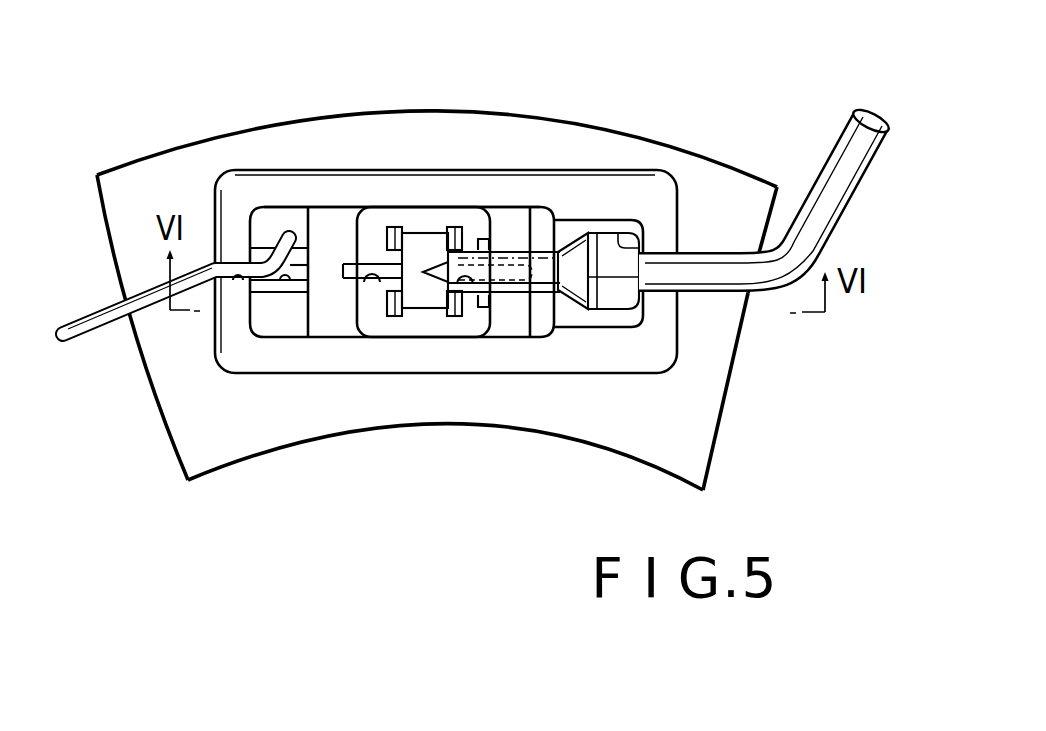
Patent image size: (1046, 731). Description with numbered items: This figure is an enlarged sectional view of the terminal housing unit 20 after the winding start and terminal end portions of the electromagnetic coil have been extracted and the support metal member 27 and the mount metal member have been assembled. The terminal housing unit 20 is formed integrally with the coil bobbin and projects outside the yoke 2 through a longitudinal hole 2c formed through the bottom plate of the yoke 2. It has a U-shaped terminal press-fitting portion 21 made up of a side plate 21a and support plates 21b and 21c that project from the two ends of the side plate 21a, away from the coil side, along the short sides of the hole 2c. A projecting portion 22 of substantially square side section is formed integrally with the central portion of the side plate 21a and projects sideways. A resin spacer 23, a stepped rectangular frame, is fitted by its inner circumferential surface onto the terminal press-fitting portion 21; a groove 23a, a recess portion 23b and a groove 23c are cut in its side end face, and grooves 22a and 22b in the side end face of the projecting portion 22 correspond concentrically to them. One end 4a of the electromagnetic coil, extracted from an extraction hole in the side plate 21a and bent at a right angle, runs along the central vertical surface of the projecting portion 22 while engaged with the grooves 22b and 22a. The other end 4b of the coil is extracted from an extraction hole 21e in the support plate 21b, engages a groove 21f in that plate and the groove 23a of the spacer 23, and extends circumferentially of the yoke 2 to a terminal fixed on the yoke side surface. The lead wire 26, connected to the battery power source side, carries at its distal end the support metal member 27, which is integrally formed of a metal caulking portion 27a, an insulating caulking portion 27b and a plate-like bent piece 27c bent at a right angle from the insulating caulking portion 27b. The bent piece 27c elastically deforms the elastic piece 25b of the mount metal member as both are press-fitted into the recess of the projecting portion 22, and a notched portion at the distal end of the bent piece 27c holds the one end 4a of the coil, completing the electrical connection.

The yoke 2 is at (680, 141).
The longitudinal hole 2c is at (540, 310).
The one end of the electromagnetic coil 4a is at (340, 300).
The other end of the electromagnetic coil 4b is at (96, 323).
The terminal housing unit 20 is at (413, 193).
The terminal press-fitting portion 21 is at (207, 368).
The side plate 21a is at (333, 320).
The support plate 21b is at (257, 220).
The support plate 21c is at (543, 217).
The extraction hole 21e is at (283, 228).
The groove 21f is at (293, 287).
The projecting portion 22 is at (355, 218).
The groove 22a is at (373, 320).
The groove 22b is at (467, 313).
The resin spacer 23 is at (205, 188).
The groove 23a is at (232, 278).
The recess portion 23b is at (648, 240).
The groove 23c is at (736, 293).
The elastic piece 25b is at (418, 300).
The lead wire 26 is at (842, 153).
The support metal member 27 is at (607, 225).
The metal caulking portion 27a is at (612, 290).
The insulating caulking portion 27b is at (503, 245).
The bent piece 27c is at (462, 228).